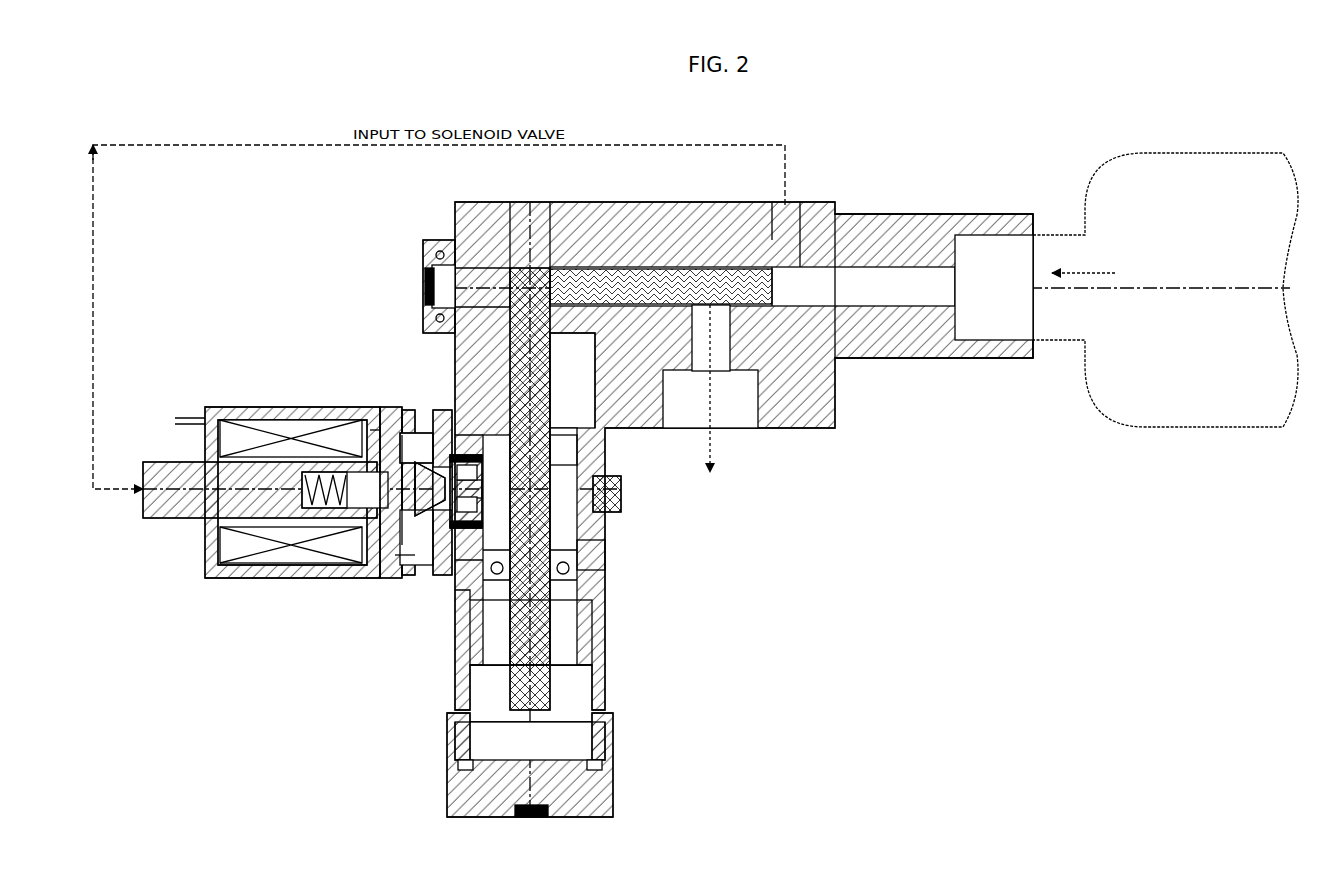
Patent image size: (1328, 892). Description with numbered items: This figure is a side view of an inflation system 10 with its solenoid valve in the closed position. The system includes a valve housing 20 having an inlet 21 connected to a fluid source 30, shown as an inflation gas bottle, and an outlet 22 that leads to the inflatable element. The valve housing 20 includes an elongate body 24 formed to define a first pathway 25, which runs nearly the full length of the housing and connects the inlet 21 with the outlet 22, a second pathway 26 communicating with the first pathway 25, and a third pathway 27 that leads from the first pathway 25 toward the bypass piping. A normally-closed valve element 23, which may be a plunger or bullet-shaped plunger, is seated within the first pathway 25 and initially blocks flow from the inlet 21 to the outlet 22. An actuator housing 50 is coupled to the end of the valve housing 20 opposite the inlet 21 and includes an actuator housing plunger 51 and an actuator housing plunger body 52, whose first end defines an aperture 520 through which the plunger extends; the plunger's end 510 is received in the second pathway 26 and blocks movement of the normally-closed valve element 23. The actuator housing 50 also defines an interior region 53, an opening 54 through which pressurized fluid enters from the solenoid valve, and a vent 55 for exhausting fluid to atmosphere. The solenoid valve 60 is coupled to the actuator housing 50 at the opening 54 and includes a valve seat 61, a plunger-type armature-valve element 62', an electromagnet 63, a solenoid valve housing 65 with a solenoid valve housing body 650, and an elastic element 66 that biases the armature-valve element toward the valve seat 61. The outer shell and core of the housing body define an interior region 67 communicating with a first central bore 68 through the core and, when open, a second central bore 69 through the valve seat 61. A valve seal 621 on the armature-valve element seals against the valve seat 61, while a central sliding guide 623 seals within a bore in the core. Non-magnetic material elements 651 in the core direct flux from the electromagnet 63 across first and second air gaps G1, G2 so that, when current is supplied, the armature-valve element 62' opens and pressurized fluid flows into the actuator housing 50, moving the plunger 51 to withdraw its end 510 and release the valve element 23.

The inflation system 10 is at (98, 735).
The valve housing 20 is at (935, 362).
The inlet 21 is at (1005, 255).
The outlet 22 is at (740, 412).
The normally-closed valve element 23 is at (697, 270).
The body 24 is at (918, 232).
The first pathway 25 is at (848, 270).
The second pathway 26 is at (540, 320).
The third pathway 27 is at (793, 212).
The fluid source 30 is at (1113, 165).
The actuator housing 50 is at (605, 625).
The actuator housing plunger 51 is at (540, 638).
The actuator housing plunger body 52 is at (455, 725).
The interior region 53 is at (572, 467).
The opening 54 is at (467, 465).
The vent 55 is at (610, 497).
The solenoid valve 60 is at (330, 565).
The valve seat 61 is at (480, 504).
The plunger-type armature-valve element 62' is at (397, 464).
The electromagnet 63 is at (210, 553).
The solenoid valve housing 65 is at (300, 423).
The elastic element 66 is at (250, 522).
The interior region 67 is at (410, 433).
The first central bore 68 is at (158, 490).
The second central bore 69 is at (600, 565).
The end 510 is at (520, 292).
The aperture 520 is at (510, 327).
The valve seal 621 is at (437, 545).
The central sliding guide 623 is at (357, 505).
The solenoid valve housing body 650 is at (463, 600).
The non-magnetic material elements 651 is at (378, 428).
The first air gap G1 is at (379, 425).
The second air gap G2 is at (402, 560).